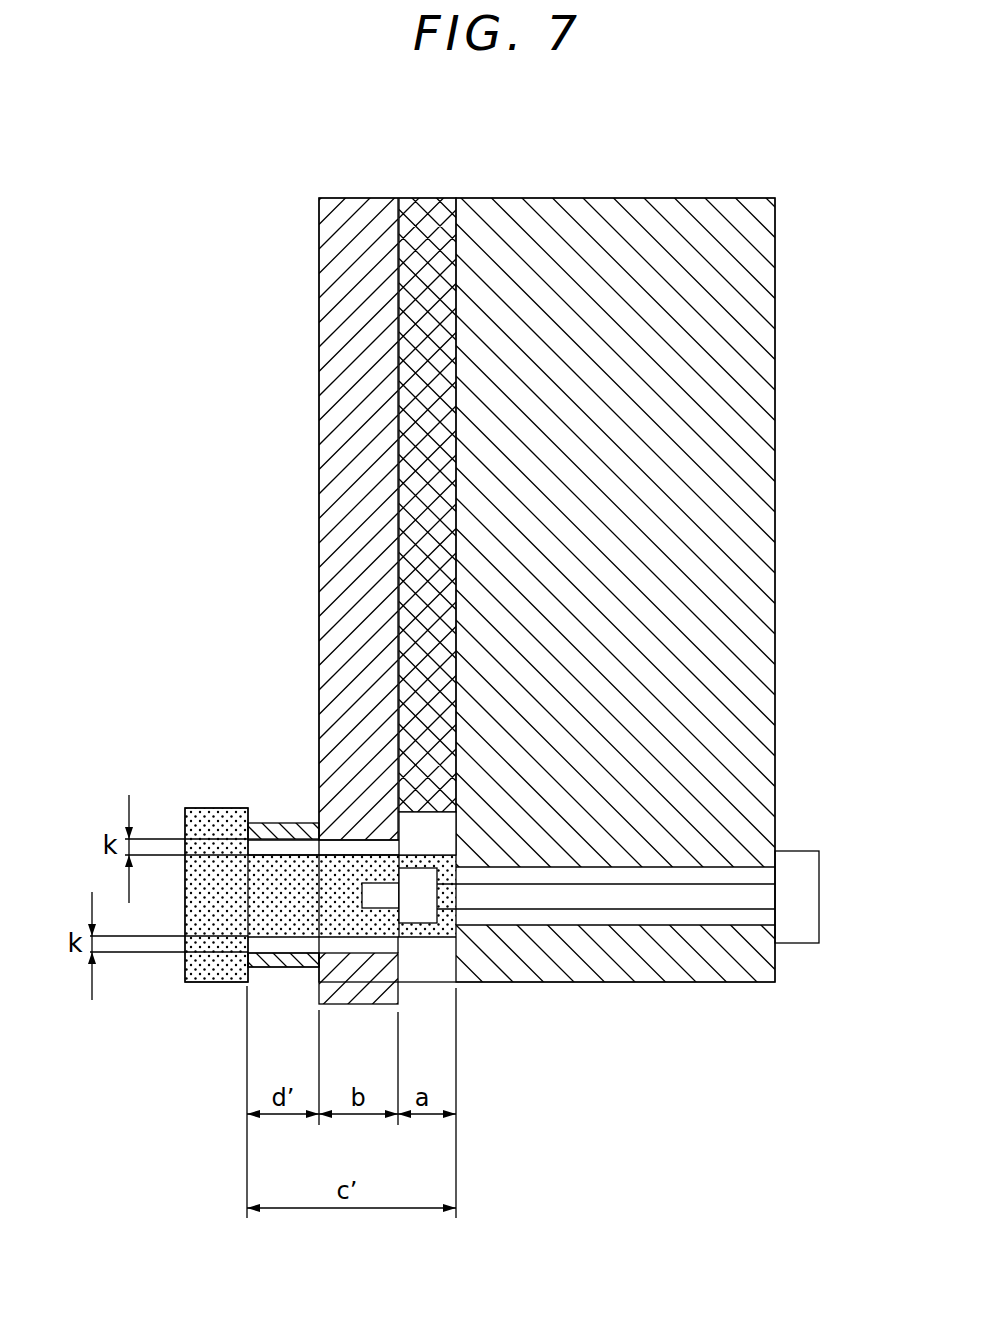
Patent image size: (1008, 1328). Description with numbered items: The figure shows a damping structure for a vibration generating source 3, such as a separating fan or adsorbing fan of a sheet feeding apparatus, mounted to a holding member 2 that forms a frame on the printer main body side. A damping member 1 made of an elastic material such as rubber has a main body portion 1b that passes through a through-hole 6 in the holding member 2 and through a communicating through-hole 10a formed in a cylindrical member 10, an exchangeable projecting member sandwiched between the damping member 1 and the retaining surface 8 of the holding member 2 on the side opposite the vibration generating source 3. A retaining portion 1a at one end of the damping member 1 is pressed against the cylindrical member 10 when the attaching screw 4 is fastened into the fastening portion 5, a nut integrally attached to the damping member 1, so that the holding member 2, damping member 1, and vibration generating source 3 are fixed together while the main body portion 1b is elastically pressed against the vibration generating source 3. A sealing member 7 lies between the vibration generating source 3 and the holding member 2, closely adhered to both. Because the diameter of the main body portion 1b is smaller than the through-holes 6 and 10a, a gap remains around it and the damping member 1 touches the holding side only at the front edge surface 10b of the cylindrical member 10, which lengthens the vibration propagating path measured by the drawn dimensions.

The damping member 1 is at (166, 804).
The retaining portion 1a is at (220, 807).
The main body portion 1b is at (410, 937).
The holding member 2 is at (304, 334).
The vibration generating source 3 is at (753, 471).
The attaching screw 4 is at (802, 900).
The fastening portion 5 is at (422, 915).
The through-hole 6 is at (348, 848).
The sealing member 7 is at (424, 204).
The retaining surface 8 is at (337, 557).
The cylindrical member 10 is at (282, 824).
The through-hole 10a is at (298, 967).
The front edge surface 10b is at (272, 967).